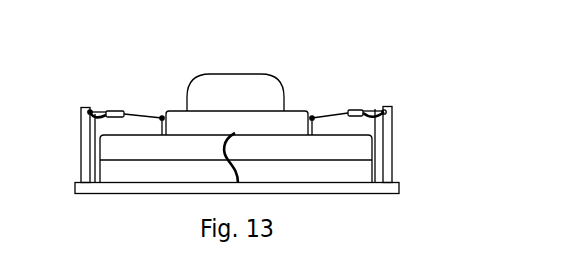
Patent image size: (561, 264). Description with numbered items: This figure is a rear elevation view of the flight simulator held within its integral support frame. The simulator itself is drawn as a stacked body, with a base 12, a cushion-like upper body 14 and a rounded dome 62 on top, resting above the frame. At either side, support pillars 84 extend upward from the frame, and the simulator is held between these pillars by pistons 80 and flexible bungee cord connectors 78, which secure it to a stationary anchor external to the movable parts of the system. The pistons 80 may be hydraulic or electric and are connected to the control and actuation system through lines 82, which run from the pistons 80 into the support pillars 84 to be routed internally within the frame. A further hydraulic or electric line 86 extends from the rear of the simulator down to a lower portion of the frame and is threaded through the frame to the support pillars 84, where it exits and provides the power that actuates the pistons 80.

The mattress 12 is at (273, 167).
The cushion 14 is at (287, 108).
The pillow 62 is at (240, 67).
The flexible connector 78 is at (97, 105).
The piston 80 is at (118, 110).
The line 82 is at (99, 118).
The support pillar 84 is at (79, 123).
The hydraulic or electric line 86 is at (227, 170).